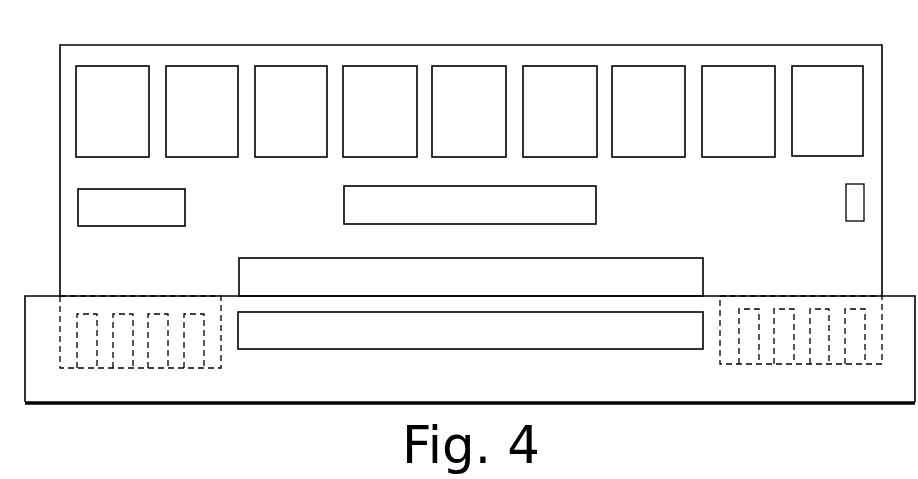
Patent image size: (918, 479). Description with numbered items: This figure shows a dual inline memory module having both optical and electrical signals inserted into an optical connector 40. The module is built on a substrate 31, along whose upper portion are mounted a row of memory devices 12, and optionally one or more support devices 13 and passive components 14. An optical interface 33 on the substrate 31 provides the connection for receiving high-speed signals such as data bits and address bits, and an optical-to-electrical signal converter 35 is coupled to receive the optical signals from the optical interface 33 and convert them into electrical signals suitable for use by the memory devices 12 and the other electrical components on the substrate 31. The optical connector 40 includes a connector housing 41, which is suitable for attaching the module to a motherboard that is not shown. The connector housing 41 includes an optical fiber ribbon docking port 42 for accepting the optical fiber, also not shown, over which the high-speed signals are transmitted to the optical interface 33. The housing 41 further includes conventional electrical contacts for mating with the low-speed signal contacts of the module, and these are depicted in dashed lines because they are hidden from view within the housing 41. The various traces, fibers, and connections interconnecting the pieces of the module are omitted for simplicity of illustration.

The memory devices 12 is at (425, 111).
The support devices 13 is at (827, 111).
The passive components 14 is at (131, 207).
The substrate 31 is at (380, 44).
The optical interface 33 is at (471, 277).
The optical-to-electrical signal converter 35 is at (470, 205).
The optical connector 40 is at (753, 447).
The connector housing 41 is at (132, 405).
The optical fiber ribbon docking port 42 is at (470, 330).